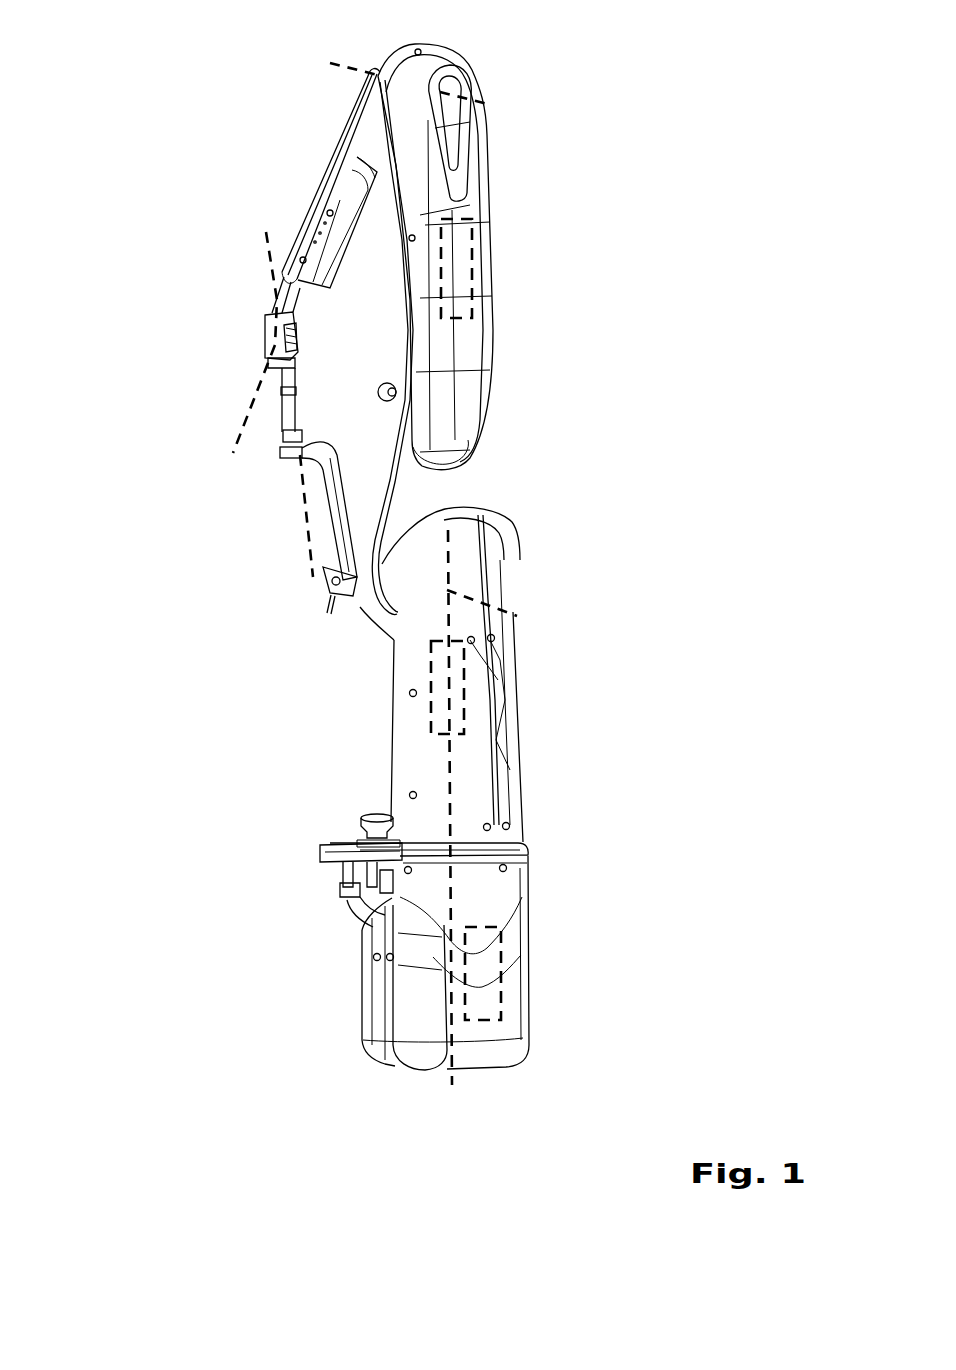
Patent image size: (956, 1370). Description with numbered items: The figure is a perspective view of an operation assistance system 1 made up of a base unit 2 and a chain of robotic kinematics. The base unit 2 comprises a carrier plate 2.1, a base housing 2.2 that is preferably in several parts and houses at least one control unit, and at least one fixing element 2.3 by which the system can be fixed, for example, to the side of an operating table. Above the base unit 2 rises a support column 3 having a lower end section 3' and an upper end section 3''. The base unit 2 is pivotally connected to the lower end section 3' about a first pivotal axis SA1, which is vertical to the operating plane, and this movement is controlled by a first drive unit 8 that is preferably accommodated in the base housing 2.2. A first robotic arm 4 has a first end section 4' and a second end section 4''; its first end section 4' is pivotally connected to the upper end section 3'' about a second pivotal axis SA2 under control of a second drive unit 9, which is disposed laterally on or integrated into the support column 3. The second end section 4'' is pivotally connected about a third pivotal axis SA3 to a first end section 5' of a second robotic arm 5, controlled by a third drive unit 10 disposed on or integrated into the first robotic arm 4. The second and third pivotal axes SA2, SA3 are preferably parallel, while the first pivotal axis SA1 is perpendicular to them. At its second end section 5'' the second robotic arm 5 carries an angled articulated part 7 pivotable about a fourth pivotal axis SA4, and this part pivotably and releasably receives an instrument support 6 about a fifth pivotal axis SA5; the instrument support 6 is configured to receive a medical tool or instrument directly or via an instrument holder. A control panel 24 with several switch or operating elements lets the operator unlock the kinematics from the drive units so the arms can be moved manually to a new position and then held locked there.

The operation assistance system 1 is at (668, 240).
The base unit 2 is at (596, 866).
The carrier plate 2.1 is at (505, 848).
The base housing 2.2 is at (492, 916).
The fixing element 2.3 is at (316, 872).
The support column 3 is at (509, 678).
The lower end section 3' is at (328, 780).
The upper end section 3'' is at (519, 347).
The first robotic arm 4 is at (496, 257).
The first end section 4' is at (537, 468).
The second end section 4'' is at (545, 140).
The second robotic arm 5 is at (261, 178).
The first end section 5' is at (289, 71).
The second end section 5'' is at (209, 280).
The instrument support 6 is at (283, 518).
The angled articulated part 7 is at (258, 343).
The first drive unit 8 is at (503, 1002).
The second drive unit 9 is at (468, 688).
The third drive unit 10 is at (465, 245).
The control panel 24 is at (308, 234).
The first pivotal axis SA1 is at (455, 828).
The second pivotal axis SA2 is at (515, 612).
The third pivotal axis SA3 is at (445, 99).
The fourth pivotal axis SA4 is at (228, 359).
The fifth pivotal axis SA5 is at (280, 540).